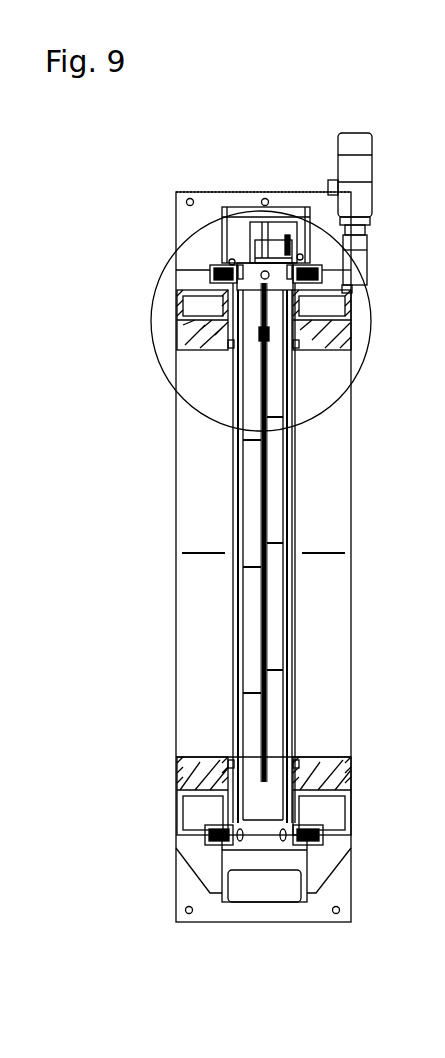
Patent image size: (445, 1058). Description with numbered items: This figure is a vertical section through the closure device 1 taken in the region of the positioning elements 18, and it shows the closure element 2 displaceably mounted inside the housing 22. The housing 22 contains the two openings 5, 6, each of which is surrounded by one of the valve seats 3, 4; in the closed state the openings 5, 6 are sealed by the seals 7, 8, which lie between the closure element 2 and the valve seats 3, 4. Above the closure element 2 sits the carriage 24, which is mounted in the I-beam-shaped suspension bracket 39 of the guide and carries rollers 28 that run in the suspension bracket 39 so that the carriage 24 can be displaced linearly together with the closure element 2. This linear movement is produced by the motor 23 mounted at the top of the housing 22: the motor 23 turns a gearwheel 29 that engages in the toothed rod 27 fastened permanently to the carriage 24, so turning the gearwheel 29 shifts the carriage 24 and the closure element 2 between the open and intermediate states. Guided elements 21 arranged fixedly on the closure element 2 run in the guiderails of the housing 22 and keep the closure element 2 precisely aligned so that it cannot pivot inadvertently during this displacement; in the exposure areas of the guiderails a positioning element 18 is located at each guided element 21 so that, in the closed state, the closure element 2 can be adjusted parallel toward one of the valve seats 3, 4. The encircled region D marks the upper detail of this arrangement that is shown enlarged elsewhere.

The closure device 1 is at (276, 178).
The closure element 2 is at (268, 405).
The valve seat 3 is at (228, 333).
The valve seat 4 is at (292, 330).
The opening 5 is at (233, 503).
The opening 6 is at (268, 505).
The seal 7 is at (230, 345).
The seal 8 is at (302, 344).
The positioning element 18 is at (215, 268).
The guided element 21 is at (232, 262).
The housing 22 is at (229, 196).
The motor 23 is at (362, 168).
The carriage 24 is at (289, 226).
The toothed rod 27 is at (292, 205).
The rollers 28 is at (278, 256).
The gearwheel 29 is at (293, 248).
The suspension bracket 39 is at (262, 212).
The detail region D is at (188, 405).